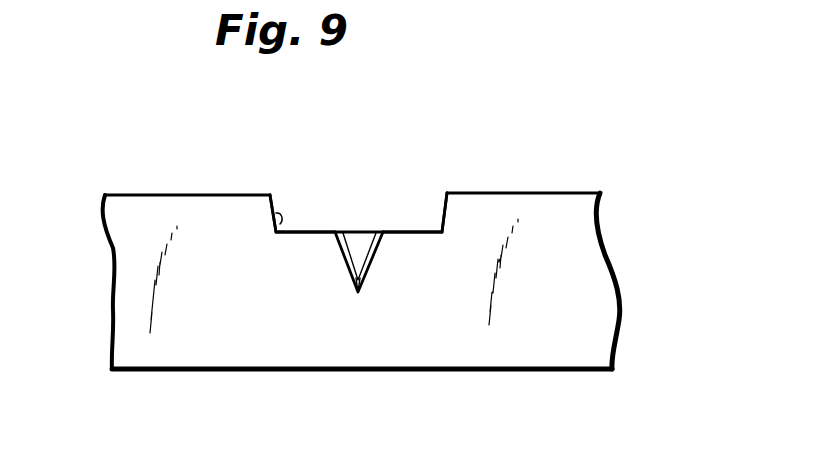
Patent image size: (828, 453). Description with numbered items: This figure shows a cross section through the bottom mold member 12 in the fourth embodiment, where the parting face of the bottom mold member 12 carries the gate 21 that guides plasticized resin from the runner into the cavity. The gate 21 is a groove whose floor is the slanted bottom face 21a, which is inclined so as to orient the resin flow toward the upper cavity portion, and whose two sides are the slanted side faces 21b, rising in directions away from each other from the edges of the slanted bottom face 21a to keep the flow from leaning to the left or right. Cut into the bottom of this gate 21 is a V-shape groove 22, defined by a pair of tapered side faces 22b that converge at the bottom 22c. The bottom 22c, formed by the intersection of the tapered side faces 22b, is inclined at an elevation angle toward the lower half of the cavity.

The bottom mold member 12 is at (587, 268).
The gate 21 is at (421, 222).
The slanted bottom face 21a is at (308, 235).
The slanted side faces 21b is at (275, 231).
The V-shape groove 22 is at (347, 205).
The tapered side faces 22b is at (343, 233).
The bottom 22c is at (362, 278).